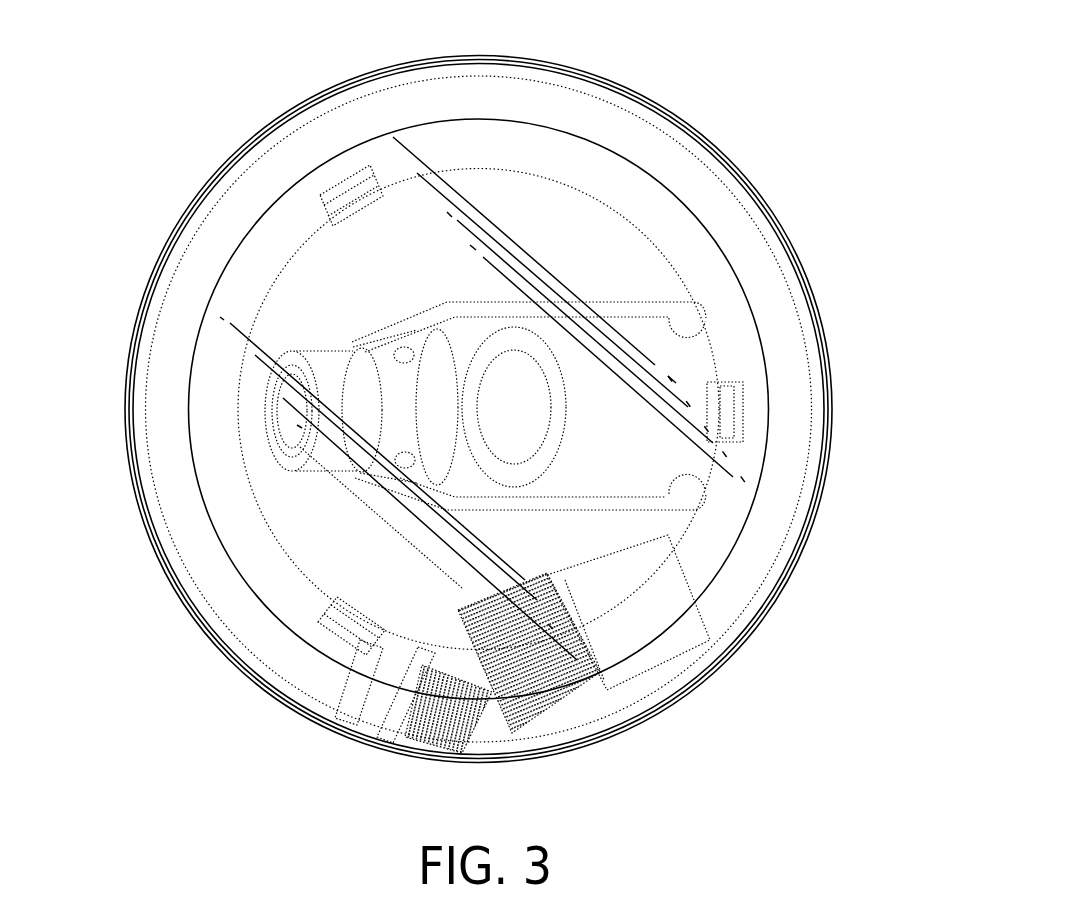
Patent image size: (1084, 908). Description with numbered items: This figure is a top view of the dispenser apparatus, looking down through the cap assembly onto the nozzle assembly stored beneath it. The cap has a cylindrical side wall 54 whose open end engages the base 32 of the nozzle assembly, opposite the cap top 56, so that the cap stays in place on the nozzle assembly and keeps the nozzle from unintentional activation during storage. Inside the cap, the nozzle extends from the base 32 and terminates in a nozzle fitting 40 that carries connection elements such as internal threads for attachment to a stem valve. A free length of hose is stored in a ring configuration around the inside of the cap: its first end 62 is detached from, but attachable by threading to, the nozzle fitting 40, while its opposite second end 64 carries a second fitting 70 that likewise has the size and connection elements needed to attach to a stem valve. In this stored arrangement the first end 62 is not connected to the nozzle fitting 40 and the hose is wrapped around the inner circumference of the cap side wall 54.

The base 32 is at (643, 198).
The nozzle fitting 40 is at (265, 400).
The cylindrical side wall 54 is at (832, 412).
The cap top 56 is at (697, 563).
The first end 62 is at (385, 738).
The second end 64 is at (648, 652).
The second fitting 70 is at (562, 690).